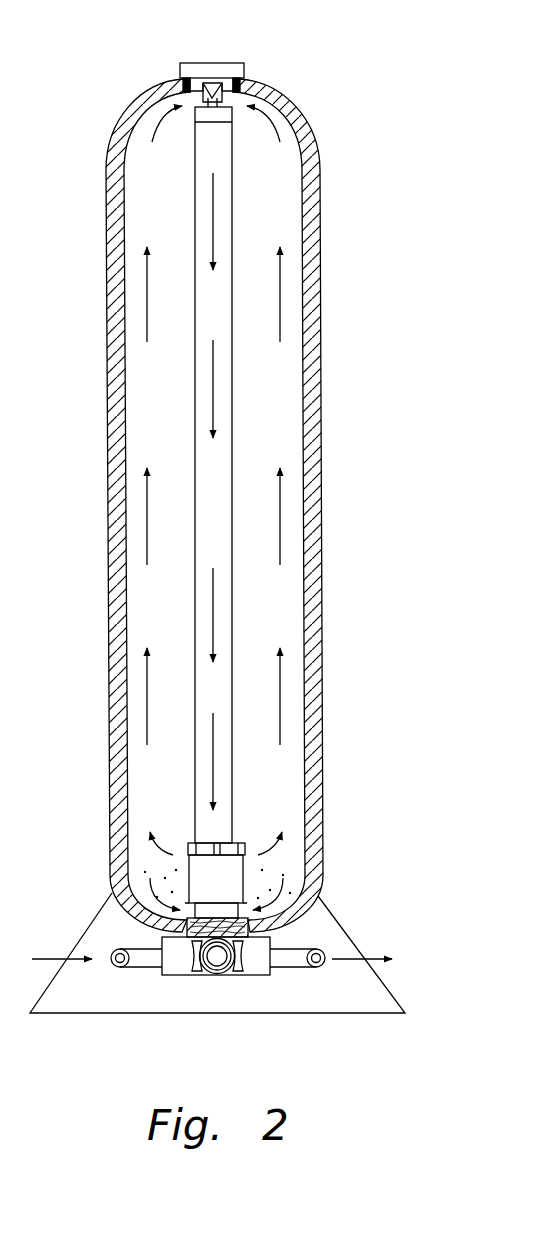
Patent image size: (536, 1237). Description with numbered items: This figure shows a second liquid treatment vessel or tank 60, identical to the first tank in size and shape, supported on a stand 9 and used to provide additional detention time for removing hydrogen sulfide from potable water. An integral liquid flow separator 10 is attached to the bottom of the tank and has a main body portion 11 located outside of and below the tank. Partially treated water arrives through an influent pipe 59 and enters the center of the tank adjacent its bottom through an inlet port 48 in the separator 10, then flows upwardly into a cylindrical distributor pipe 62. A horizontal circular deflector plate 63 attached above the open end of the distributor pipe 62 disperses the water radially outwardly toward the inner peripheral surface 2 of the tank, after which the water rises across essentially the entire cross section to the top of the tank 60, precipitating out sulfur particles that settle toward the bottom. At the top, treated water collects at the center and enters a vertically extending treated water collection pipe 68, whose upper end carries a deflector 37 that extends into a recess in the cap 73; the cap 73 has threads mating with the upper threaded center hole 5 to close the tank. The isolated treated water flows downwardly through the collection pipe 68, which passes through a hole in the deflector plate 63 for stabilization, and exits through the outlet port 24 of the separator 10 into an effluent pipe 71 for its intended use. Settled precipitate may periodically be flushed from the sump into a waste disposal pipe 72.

The inner peripheral surface 2 is at (177, 505).
The upper threaded center hole 5 is at (187, 82).
The stand 9 is at (88, 933).
The integral liquid flow separator 10 is at (286, 982).
The main body portion 11 is at (182, 975).
The outlet port 24 is at (283, 935).
The deflector 37 is at (223, 97).
The inlet port 48 is at (165, 975).
The influent pipe 59 is at (135, 966).
The second liquid treatment vessel or tank 60 is at (110, 740).
The cylindrical distributor pipe 62 is at (207, 868).
The horizontal circular deflector plate 63 is at (232, 838).
The treated water collection pipe 68 is at (212, 300).
The effluent pipe 71 is at (303, 950).
The waste disposal pipe 72 is at (232, 975).
The cap 73 is at (212, 62).